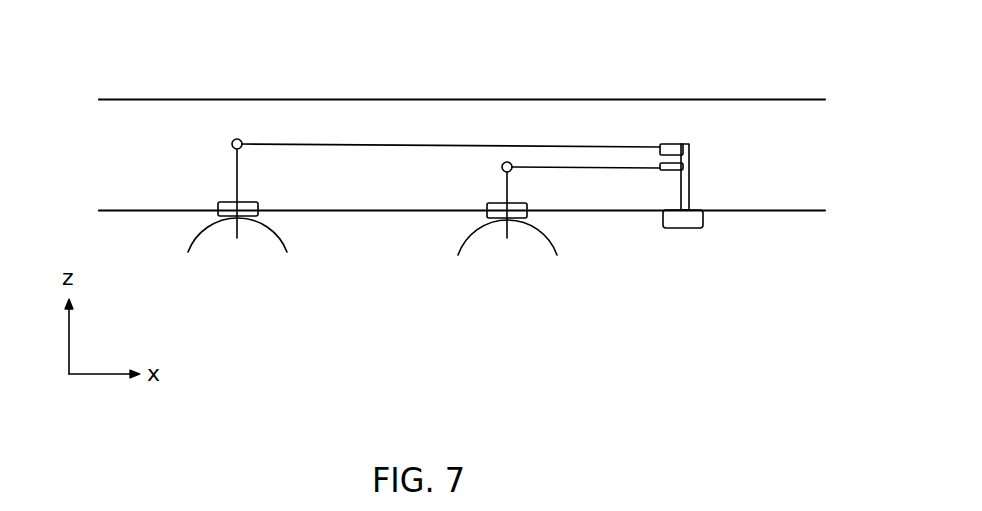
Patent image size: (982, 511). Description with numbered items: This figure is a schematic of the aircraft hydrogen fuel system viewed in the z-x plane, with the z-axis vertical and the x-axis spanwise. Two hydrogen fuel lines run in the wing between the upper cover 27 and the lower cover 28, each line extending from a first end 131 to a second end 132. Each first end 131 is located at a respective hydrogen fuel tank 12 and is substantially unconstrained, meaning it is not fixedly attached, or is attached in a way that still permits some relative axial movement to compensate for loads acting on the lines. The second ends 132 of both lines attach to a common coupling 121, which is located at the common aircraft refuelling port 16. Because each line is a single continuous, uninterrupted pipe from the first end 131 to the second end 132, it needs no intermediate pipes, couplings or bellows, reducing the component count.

The fuel tank 12 is at (283, 240).
The aircraft refuelling port 16 is at (682, 242).
The upper cover 27 is at (746, 99).
The lower cover 28 is at (760, 211).
The common coupling 121 is at (683, 143).
The first end 131 is at (238, 238).
The second end 132 is at (658, 146).